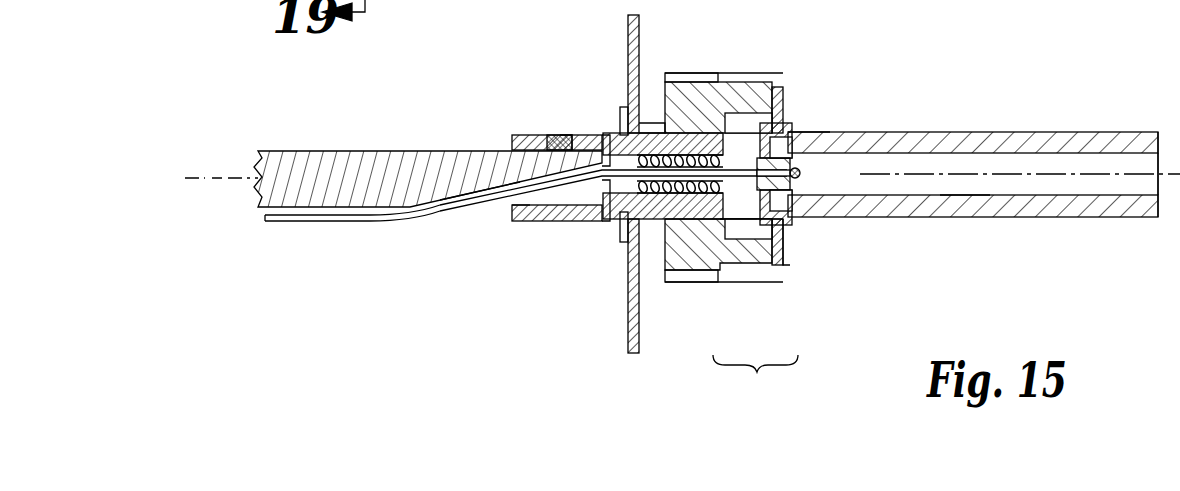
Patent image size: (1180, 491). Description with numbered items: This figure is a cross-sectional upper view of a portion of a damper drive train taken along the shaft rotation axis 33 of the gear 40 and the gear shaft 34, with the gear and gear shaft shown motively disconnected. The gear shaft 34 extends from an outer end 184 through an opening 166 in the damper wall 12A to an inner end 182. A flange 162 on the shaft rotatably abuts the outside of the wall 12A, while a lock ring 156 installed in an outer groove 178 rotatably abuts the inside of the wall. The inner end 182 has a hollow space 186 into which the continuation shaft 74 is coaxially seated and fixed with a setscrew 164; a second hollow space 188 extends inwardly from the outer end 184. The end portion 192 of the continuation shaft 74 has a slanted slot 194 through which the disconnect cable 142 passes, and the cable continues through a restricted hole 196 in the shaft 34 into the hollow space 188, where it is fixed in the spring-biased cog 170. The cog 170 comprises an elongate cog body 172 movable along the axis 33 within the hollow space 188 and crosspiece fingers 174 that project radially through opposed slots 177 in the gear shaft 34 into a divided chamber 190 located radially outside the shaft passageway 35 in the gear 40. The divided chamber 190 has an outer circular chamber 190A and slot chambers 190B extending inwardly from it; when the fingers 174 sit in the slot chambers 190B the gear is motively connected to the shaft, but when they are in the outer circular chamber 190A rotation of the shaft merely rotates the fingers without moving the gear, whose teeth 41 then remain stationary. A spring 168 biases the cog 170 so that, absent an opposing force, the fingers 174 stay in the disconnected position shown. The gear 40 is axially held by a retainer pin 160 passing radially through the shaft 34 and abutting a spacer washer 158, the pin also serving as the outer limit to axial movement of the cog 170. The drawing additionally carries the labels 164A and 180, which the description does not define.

The damper wall 12A is at (628, 287).
The shaft rotation axis 33 is at (205, 178).
The gear shaft 34 is at (1072, 217).
The shaft passageway 35 is at (698, 132).
The gear 40 is at (750, 75).
The teeth 41 is at (685, 73).
The continuation shaft 74 is at (325, 150).
The disconnect cable 142 is at (335, 222).
The lock ring 156 is at (630, 125).
The spacer washer 158 is at (783, 95).
The retainer pin 160 is at (790, 178).
The flange 162 is at (645, 133).
The setscrew 164 is at (556, 137).
The fastener head 164A is at (570, 137).
The opening 166 is at (643, 233).
The spring 168 is at (745, 155).
The spring-biased cog 170 is at (800, 133).
The elongate cog body 172 is at (802, 173).
The crosspiece fingers 174 is at (785, 228).
The opposed slots 177 is at (775, 157).
The outer groove 178 is at (622, 130).
The lower sleeve 180 is at (650, 230).
The inner end 182 is at (507, 223).
The outer end 184 is at (1152, 217).
The hollow space 186 is at (540, 222).
The hollow space 188 is at (968, 190).
The divided chamber 190 is at (762, 375).
The outer circular chamber 190A is at (770, 235).
The slot chambers 190B is at (750, 233).
The end portion 192 is at (505, 160).
The slanted slot 194 is at (487, 186).
The restricted hole 196 is at (605, 214).